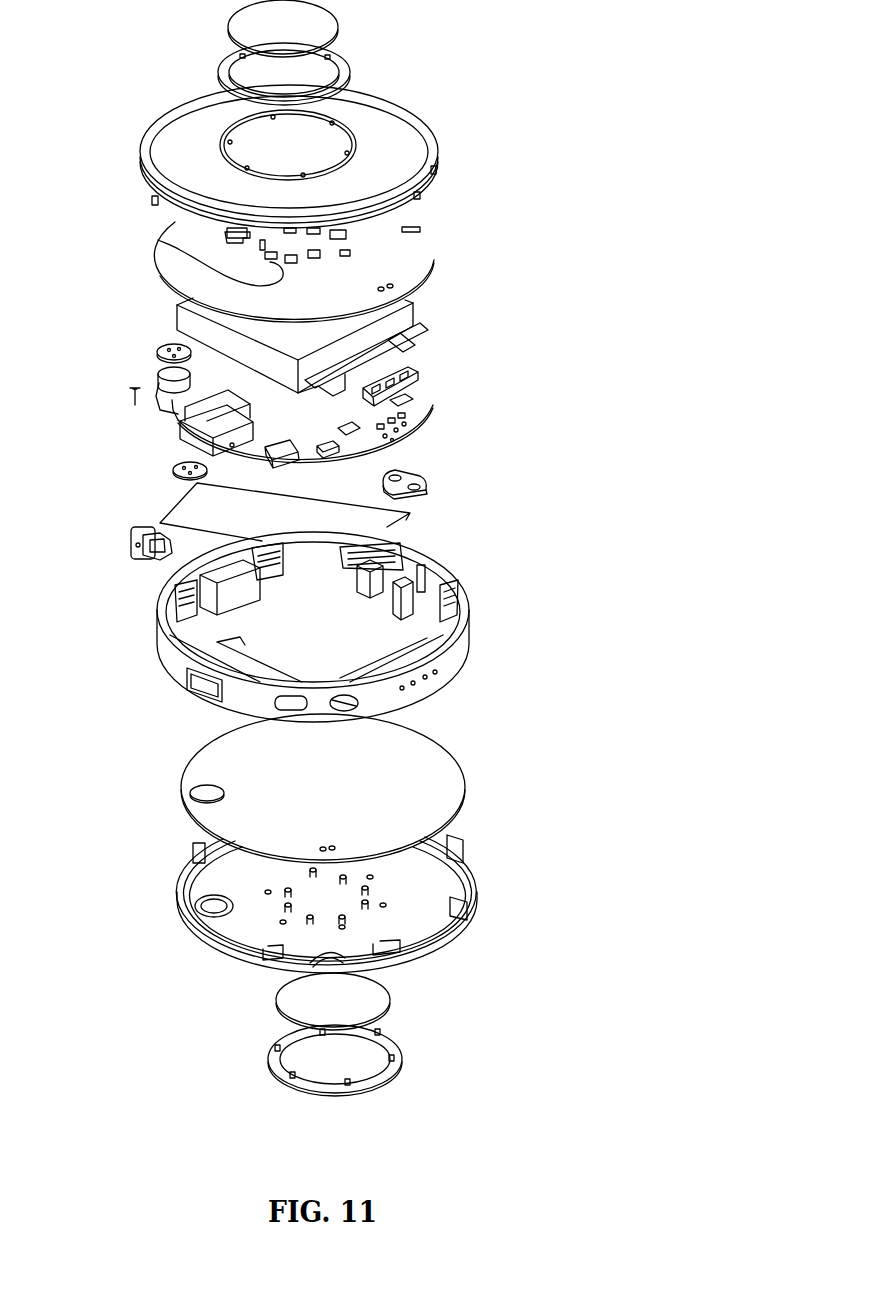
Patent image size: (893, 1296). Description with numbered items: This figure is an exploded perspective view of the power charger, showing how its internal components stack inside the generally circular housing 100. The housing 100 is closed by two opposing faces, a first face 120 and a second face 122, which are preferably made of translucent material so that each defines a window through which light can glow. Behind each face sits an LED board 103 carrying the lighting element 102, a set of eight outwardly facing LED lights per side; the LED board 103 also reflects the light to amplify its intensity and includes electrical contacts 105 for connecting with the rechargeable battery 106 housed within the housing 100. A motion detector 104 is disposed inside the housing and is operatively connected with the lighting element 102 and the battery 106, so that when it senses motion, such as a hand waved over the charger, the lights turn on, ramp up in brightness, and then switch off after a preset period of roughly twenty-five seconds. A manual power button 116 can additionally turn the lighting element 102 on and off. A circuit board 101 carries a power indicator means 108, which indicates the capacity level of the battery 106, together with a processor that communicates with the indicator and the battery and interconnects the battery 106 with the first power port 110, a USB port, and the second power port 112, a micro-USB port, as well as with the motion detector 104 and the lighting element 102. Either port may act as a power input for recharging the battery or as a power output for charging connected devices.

The second face 122 is at (376, 105).
The LED board 103 is at (414, 237).
The lighting element 102 is at (170, 243).
The electrical contacts 105 is at (403, 290).
The battery 106 is at (421, 313).
The motion detector 104 is at (140, 363).
The power indicator means 108 is at (411, 381).
The circuit board 101 is at (411, 448).
The first power port 110 is at (178, 442).
The second power port 112 is at (277, 466).
The manual power button 116 is at (150, 562).
The housing 100 is at (458, 641).
The first face 120 is at (441, 950).